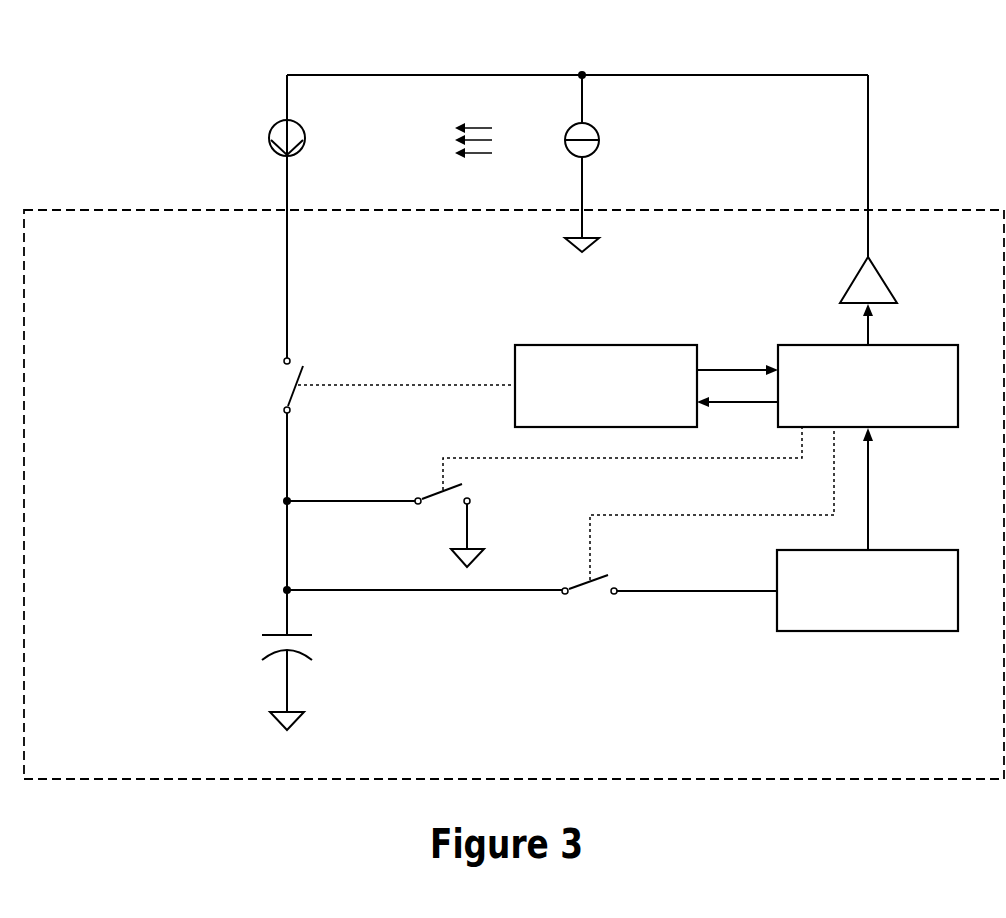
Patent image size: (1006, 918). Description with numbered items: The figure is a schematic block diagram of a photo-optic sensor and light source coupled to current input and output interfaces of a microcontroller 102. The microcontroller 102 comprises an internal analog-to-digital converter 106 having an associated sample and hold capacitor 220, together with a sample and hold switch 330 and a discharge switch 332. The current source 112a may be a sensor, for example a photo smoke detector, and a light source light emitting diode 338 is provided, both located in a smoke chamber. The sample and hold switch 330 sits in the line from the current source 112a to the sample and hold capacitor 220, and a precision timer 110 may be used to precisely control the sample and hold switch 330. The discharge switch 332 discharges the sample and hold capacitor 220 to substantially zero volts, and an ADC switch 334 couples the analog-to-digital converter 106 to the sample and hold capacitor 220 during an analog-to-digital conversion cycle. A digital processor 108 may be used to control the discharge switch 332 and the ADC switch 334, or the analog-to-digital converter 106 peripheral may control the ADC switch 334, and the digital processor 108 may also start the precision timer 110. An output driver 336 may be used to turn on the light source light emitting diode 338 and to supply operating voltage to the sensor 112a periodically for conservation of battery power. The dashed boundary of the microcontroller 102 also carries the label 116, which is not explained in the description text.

The microcontroller 102 is at (950, 208).
The analog-to-digital converter 106 is at (909, 549).
The digital processor 108 is at (918, 344).
The precision timer 110 is at (655, 344).
The current source 112a is at (274, 126).
The integrated circuit 116 is at (514, 755).
The sample and hold capacitor 220 is at (312, 645).
The sample and hold switch 330 is at (296, 385).
The discharge switch 332 is at (441, 490).
The ADC switch 334 is at (588, 598).
The output driver 336 is at (884, 282).
The light source light emitting diode 338 is at (598, 131).